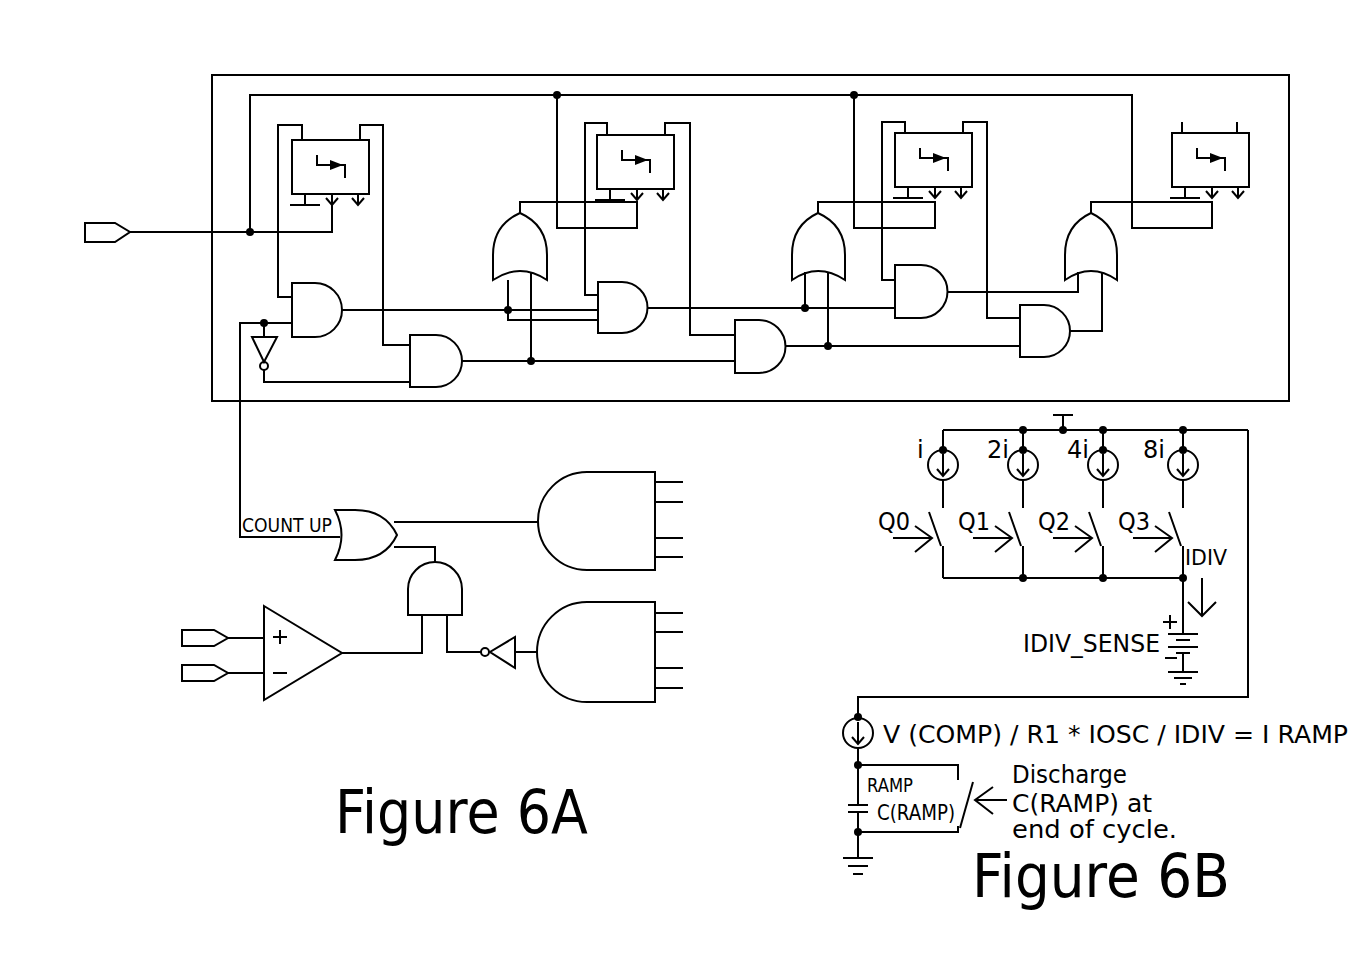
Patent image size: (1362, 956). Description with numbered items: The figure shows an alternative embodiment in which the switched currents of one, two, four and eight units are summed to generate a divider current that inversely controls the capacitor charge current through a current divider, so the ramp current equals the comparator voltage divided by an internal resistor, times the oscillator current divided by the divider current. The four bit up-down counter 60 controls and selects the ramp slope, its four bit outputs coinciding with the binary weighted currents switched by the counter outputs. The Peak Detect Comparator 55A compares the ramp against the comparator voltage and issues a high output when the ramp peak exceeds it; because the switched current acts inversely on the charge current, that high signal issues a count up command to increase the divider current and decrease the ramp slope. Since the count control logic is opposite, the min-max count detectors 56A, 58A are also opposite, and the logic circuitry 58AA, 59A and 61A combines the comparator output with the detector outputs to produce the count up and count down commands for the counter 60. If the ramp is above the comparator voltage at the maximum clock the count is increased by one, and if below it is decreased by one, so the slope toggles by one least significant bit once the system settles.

The four bit up-down counter 60 is at (1264, 74).
The logic circuitry 61A is at (370, 524).
The minimum count detect gate 56A is at (577, 481).
The logic circuitry 59A is at (443, 573).
The Peak Detect Comparator 55A is at (303, 638).
The logic circuitry 58AA is at (505, 640).
The maximum count detect gate 58A is at (558, 680).